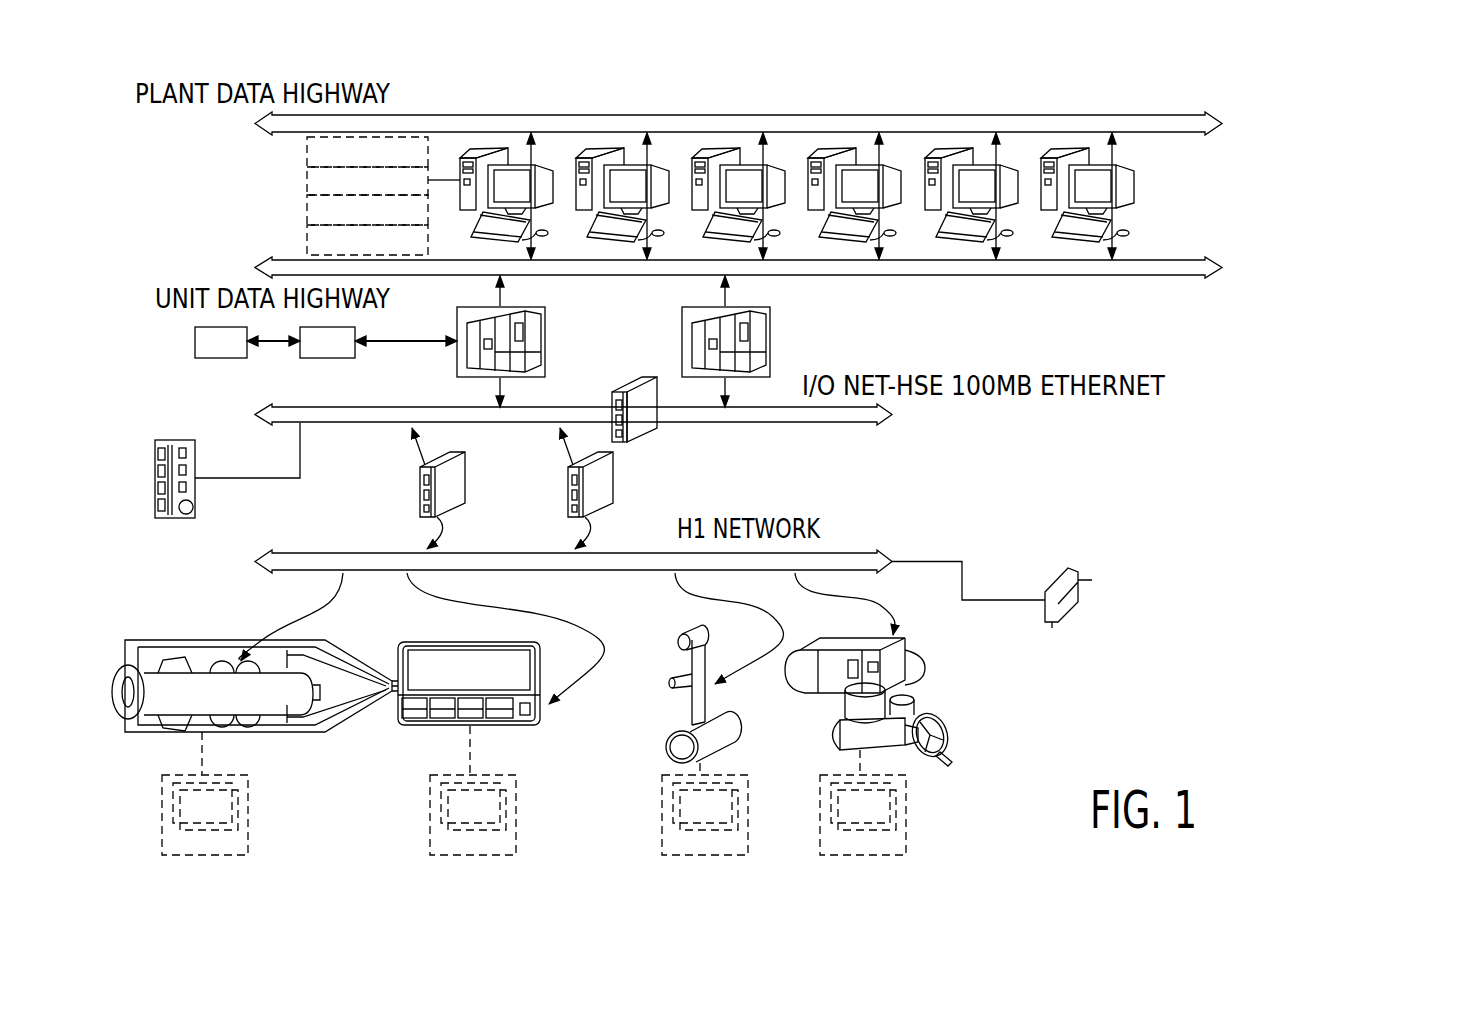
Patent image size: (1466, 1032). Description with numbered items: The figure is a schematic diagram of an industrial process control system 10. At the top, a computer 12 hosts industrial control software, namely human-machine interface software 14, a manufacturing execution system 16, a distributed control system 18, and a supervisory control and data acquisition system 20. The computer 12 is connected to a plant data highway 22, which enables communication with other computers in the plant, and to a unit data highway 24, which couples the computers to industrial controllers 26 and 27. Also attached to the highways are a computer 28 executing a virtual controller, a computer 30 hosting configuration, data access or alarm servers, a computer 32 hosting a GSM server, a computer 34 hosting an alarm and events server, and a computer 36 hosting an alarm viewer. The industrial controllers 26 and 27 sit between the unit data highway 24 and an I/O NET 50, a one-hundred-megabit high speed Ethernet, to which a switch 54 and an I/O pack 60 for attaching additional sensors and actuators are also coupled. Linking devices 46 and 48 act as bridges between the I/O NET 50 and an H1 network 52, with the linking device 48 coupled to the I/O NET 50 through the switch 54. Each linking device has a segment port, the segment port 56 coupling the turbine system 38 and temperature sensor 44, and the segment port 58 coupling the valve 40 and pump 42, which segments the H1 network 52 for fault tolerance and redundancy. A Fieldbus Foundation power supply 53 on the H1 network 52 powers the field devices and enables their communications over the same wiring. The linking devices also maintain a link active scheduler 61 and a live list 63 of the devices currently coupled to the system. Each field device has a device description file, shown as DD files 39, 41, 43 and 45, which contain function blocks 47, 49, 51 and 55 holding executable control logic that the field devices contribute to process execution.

The industrial process control system 10 is at (1362, 114).
The computer 12 is at (478, 152).
The human-machine interface (HMI) software 14 is at (307, 153).
The manufacturing execution system (MES) 16 is at (307, 182).
The distributed control system (DCS) 18 is at (307, 212).
The supervisor control and data acquisition (SCADA) system 20 is at (307, 242).
The plant data highway 22 is at (1218, 116).
The unit data highway 24 is at (1218, 262).
The industrial controller 26 is at (772, 340).
The industrial controller 27 is at (547, 340).
The computer 28 is at (594, 152).
The computer 30 is at (710, 152).
The computer 32 is at (826, 152).
The computer 34 is at (943, 152).
The computer 36 is at (1059, 152).
The turbine system 38 is at (282, 746).
The device description (DD) file 39 is at (205, 856).
The valve 40 is at (715, 752).
The device description (DD) file 41 is at (705, 856).
The pump 42 is at (955, 750).
The device description (DD) file 43 is at (863, 856).
The temperature sensor 44 is at (500, 726).
The device description (DD) file 45 is at (473, 856).
The linking device 46 is at (460, 480).
The function block 47 is at (232, 800).
The linking device 48 is at (608, 480).
The function block 49 is at (732, 800).
The I/O NET 50 is at (890, 424).
The function block 51 is at (890, 800).
The H1 network 52 is at (890, 552).
The Fieldbus Foundation power supply 53 is at (1058, 576).
The switch 54 is at (645, 438).
The function block 55 is at (500, 800).
The segment port 56 is at (412, 516).
The segment port 58 is at (560, 516).
The I/O pack 60 is at (172, 440).
The link active scheduler (LAS) 61 is at (325, 358).
The live list 63 is at (195, 343).